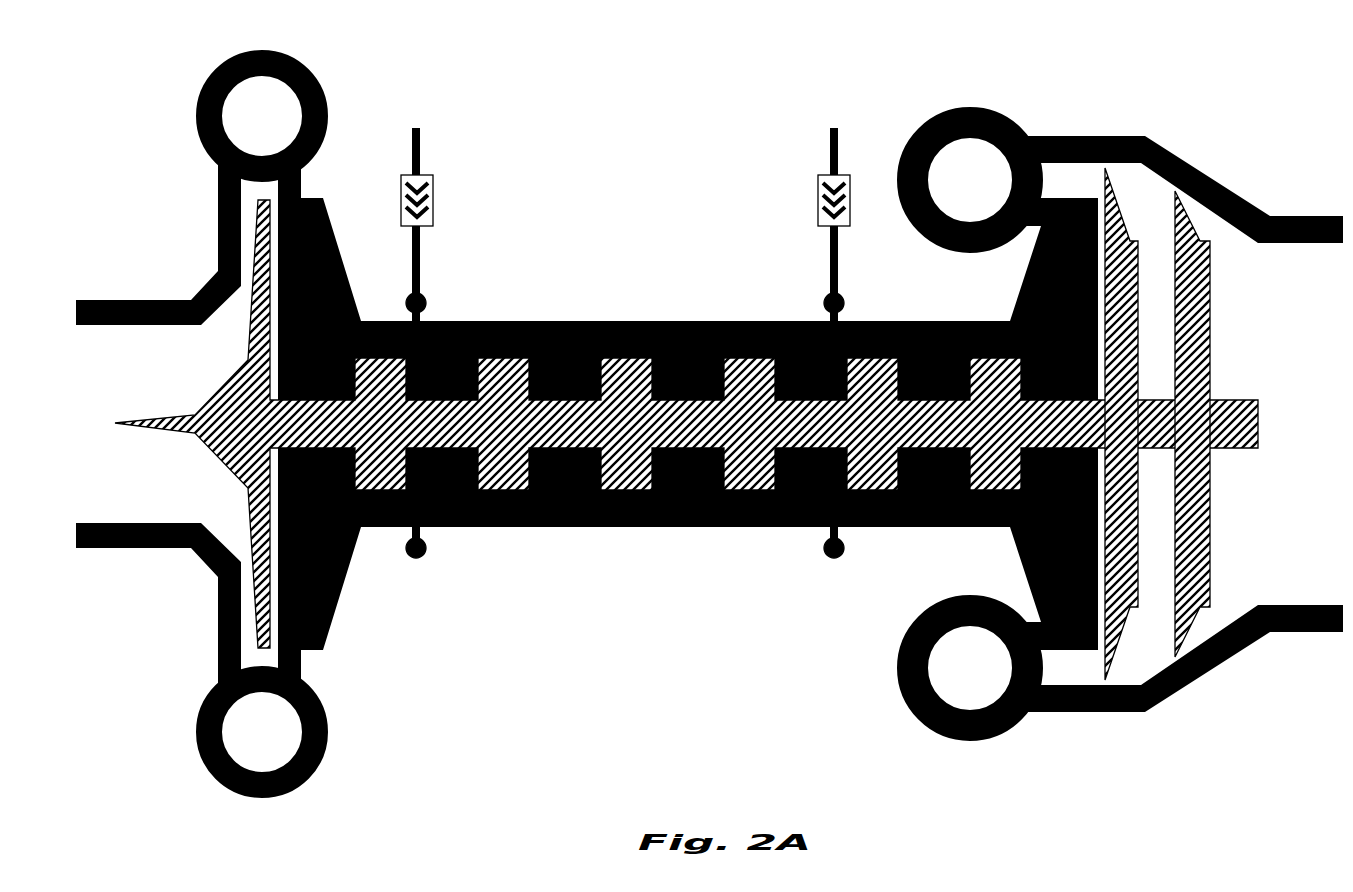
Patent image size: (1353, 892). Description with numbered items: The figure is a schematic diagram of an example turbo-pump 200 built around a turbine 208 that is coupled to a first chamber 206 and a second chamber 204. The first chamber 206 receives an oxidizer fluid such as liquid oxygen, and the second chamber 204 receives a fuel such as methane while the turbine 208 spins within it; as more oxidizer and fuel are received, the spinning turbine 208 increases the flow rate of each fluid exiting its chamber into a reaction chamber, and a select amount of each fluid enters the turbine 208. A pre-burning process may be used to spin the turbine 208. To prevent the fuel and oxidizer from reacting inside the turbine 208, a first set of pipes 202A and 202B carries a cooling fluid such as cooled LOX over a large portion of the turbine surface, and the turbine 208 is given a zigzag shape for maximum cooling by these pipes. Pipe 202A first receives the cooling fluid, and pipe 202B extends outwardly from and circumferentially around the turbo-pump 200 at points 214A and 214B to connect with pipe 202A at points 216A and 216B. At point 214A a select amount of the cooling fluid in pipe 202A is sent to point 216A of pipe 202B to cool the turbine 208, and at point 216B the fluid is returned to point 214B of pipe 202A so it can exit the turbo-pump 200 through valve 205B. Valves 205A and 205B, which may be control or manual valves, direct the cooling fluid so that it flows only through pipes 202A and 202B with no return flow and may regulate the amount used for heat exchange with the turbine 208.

The turbo-pump 200 is at (617, 120).
The pipe 202A is at (415, 245).
The pipe 202B is at (642, 492).
The second chamber 204 is at (163, 478).
The valve 205A is at (418, 172).
The valve 205B is at (818, 172).
The first chamber 206 is at (1222, 578).
The turbine 208 is at (247, 307).
The point 214A is at (418, 297).
The point 214B is at (816, 293).
The point 216A is at (412, 548).
The point 216B is at (826, 550).